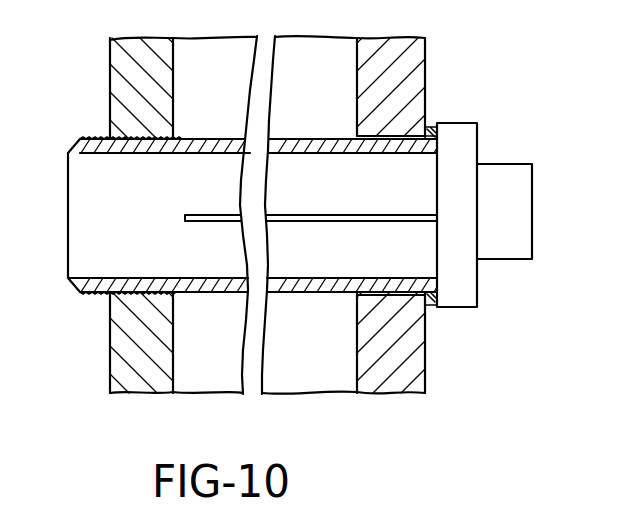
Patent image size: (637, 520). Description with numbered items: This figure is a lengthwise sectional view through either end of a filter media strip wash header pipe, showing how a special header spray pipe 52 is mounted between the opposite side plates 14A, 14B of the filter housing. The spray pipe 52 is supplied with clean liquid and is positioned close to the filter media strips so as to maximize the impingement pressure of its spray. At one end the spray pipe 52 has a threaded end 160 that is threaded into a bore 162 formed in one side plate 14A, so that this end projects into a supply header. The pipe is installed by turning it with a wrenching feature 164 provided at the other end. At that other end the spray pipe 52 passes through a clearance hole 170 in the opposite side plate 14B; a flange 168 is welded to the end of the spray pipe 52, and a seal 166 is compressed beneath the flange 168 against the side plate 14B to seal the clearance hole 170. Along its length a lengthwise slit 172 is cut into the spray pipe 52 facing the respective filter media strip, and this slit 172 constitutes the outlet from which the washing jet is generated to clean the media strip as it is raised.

The side plate 14A is at (104, 62).
The side plate 14B is at (382, 22).
The spray pipe 52 is at (337, 102).
The threaded end 160 is at (100, 137).
The bore 162 is at (140, 141).
The wrenching feature 164 is at (513, 134).
The seal 166 is at (432, 130).
The flange 168 is at (490, 110).
The clearance hole 170 is at (379, 140).
The lengthwise slit 172 is at (327, 212).